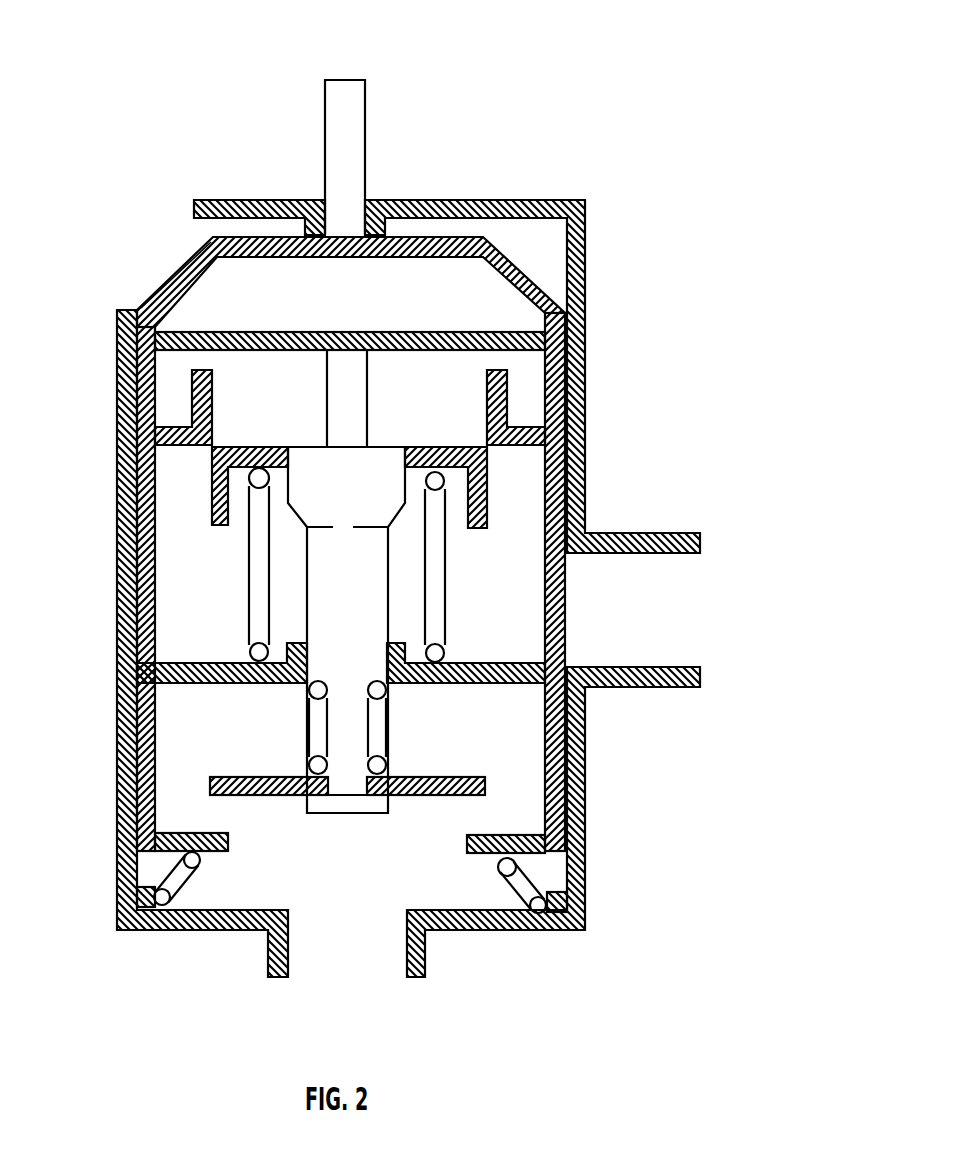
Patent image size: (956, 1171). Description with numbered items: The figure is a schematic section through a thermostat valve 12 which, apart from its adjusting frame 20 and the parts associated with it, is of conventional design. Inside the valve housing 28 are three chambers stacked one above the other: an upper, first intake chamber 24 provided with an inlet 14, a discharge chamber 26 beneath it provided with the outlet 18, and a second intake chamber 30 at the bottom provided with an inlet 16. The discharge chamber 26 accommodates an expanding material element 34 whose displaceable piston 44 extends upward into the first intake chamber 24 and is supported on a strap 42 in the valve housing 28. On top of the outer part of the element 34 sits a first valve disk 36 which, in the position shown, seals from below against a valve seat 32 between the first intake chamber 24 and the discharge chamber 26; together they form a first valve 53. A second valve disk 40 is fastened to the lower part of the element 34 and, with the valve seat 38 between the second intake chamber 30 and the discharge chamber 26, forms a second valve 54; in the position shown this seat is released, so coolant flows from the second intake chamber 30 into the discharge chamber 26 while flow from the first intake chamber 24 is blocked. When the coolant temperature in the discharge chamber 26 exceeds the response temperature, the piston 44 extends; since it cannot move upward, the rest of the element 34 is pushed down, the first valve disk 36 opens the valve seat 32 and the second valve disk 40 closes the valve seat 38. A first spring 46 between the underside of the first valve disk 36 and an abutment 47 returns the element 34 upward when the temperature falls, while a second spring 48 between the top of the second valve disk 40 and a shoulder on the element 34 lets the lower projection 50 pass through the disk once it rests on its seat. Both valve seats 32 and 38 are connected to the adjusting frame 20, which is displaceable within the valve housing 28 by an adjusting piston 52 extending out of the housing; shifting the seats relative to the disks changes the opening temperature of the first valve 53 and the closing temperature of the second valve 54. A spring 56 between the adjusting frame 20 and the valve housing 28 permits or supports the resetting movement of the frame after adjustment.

The thermostat valve 12 is at (466, 85).
The inlet 14 is at (150, 250).
The inlet 16 is at (348, 933).
The outlet 18 is at (668, 617).
The adjusting frame 20 is at (274, 253).
The first intake chamber 24 is at (389, 303).
The discharge chamber 26 is at (512, 577).
The valve housing 28 is at (585, 245).
The second intake chamber 30 is at (351, 867).
The valve seat 32 is at (190, 427).
The expanding material element 34 is at (345, 615).
The first valve disk 36 is at (212, 487).
The valve seat 38 is at (183, 832).
The second valve disk 40 is at (260, 775).
The strap 42 is at (237, 330).
The piston 44 is at (355, 385).
The first spring 46 is at (256, 648).
The abutment 47 is at (508, 663).
The second spring 48 is at (380, 767).
The lower projection 50 is at (345, 727).
The adjusting piston 52 is at (360, 143).
The first valve 53 is at (245, 432).
The second valve 54 is at (435, 853).
The spring 56 is at (512, 867).